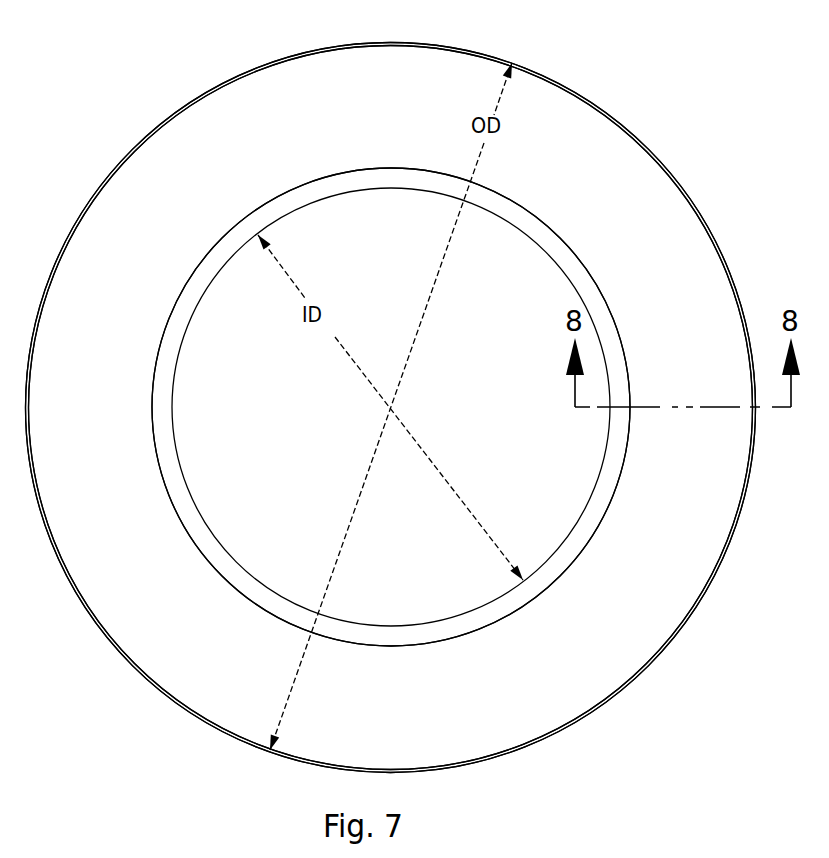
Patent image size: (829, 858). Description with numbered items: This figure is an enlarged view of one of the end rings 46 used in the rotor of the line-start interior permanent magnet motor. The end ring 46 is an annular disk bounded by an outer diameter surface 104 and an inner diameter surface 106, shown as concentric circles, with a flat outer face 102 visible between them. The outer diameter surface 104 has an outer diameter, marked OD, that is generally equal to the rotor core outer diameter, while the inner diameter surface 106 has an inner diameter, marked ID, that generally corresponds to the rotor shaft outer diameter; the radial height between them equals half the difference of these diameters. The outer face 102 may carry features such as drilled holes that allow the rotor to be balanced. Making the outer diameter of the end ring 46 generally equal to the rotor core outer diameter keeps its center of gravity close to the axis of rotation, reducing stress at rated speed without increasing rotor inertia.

The end ring 46 is at (715, 232).
The outer face 102 is at (433, 715).
The outer diameter surface 104 is at (597, 102).
The inner diameter surface 106 is at (212, 532).